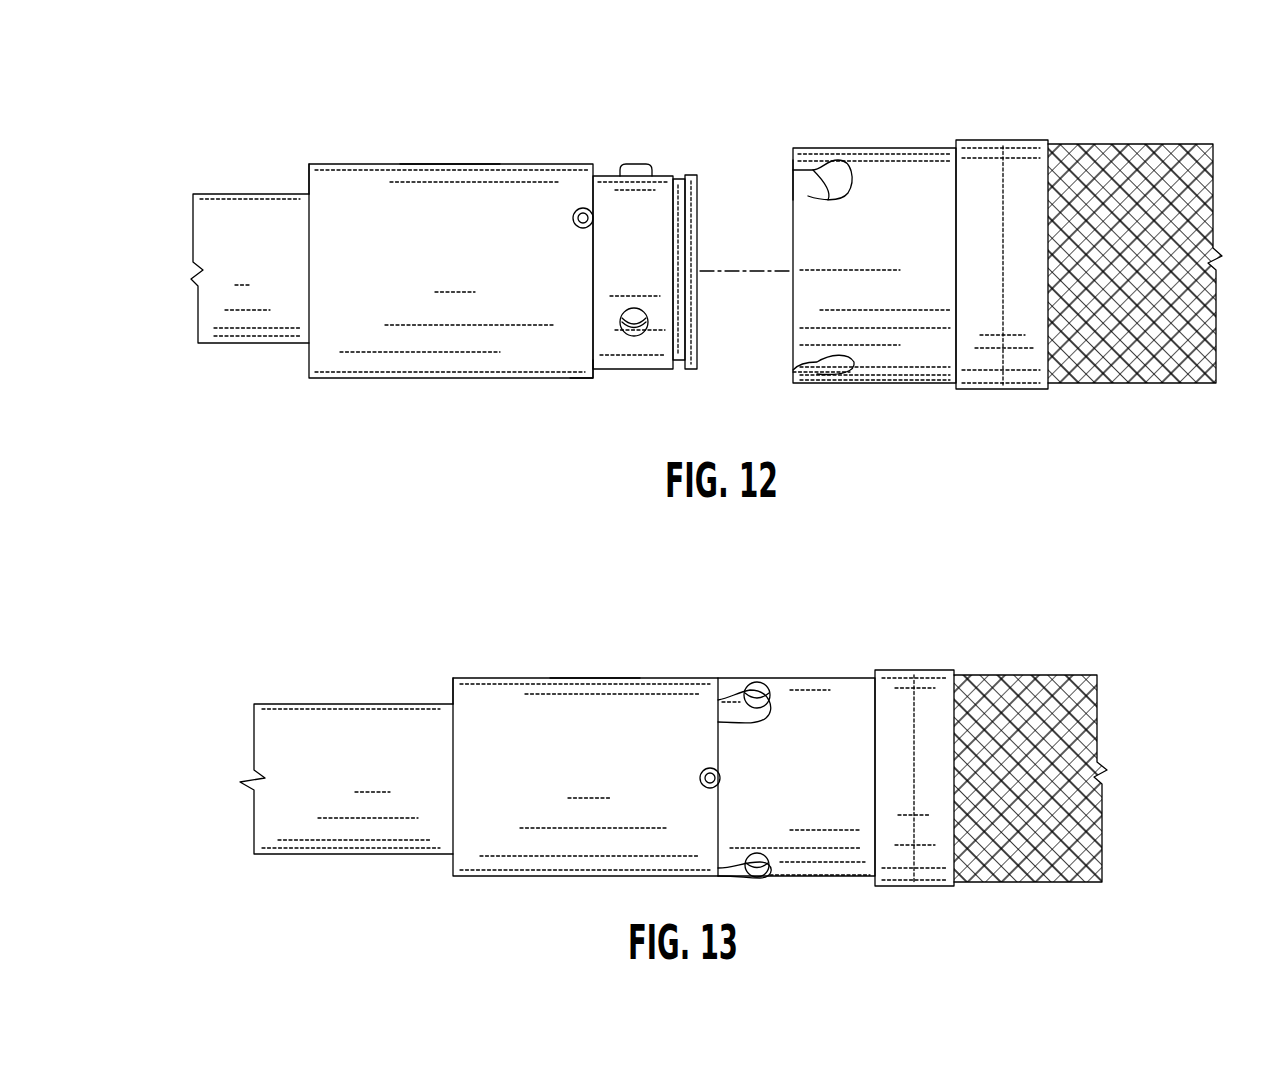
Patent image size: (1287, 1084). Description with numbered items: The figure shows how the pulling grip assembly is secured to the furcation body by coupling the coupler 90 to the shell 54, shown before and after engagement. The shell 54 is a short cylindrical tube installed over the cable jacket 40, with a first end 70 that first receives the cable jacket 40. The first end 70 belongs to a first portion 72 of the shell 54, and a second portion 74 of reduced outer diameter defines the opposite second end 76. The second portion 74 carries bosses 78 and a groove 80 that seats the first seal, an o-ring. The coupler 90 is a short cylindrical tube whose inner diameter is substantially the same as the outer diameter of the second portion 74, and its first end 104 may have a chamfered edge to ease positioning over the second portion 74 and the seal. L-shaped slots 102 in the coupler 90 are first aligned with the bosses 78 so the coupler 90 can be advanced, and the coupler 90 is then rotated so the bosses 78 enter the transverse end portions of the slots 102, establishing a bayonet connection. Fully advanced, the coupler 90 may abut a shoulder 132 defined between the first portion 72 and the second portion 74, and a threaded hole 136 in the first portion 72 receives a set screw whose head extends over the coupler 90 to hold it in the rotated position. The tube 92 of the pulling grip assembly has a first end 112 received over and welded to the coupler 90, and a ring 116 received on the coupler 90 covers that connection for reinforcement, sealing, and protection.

In FIG. 12, the cable jacket 40 is at (257, 195).
In FIG. 13, the cable jacket 40 is at (309, 718).
In FIG. 12, the shell 54 is at (467, 132).
In FIG. 13, the shell 54 is at (593, 670).
In FIG. 12, the first end 70 is at (309, 178).
In FIG. 13, the first end 70 is at (453, 692).
In FIG. 12, the first portion 72 is at (395, 160).
In FIG. 13, the first portion 72 is at (512, 672).
In FIG. 12, the second portion 74 is at (605, 170).
In FIG. 12, the second end 76 is at (700, 200).
In FIG. 12, the bosses 78 is at (636, 162).
In FIG. 13, the bosses 78 is at (755, 688).
In FIG. 12, the groove 80 is at (680, 176).
In FIG. 12, the coupler 90 is at (890, 145).
In FIG. 13, the coupler 90 is at (801, 672).
In FIG. 12, the tube 92 is at (1122, 138).
In FIG. 13, the tube 92 is at (1018, 670).
In FIG. 12, the slots 102 is at (832, 175).
In FIG. 13, the slots 102 is at (745, 715).
In FIG. 12, the first end 104 is at (792, 160).
In FIG. 12, the first end 112 is at (1001, 350).
In FIG. 13, the first end 112 is at (913, 850).
In FIG. 12, the ring 116 is at (980, 140).
In FIG. 13, the ring 116 is at (897, 670).
In FIG. 12, the shoulder 132 is at (603, 380).
In FIG. 12, the threaded hole 136 is at (572, 215).
In FIG. 13, the threaded hole 136 is at (700, 778).